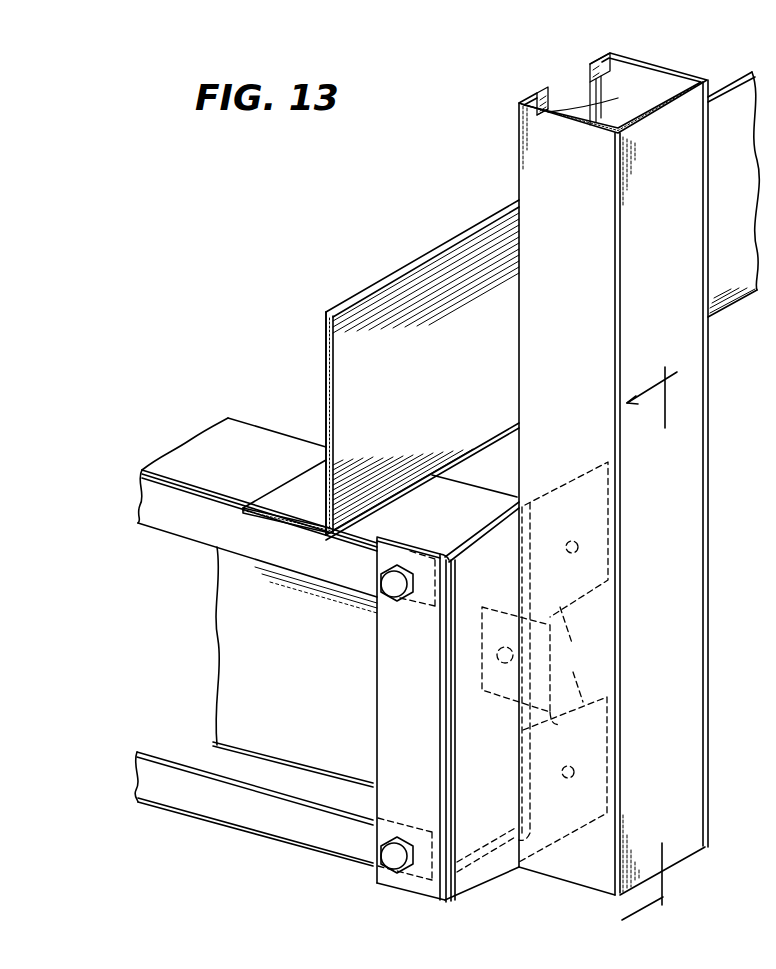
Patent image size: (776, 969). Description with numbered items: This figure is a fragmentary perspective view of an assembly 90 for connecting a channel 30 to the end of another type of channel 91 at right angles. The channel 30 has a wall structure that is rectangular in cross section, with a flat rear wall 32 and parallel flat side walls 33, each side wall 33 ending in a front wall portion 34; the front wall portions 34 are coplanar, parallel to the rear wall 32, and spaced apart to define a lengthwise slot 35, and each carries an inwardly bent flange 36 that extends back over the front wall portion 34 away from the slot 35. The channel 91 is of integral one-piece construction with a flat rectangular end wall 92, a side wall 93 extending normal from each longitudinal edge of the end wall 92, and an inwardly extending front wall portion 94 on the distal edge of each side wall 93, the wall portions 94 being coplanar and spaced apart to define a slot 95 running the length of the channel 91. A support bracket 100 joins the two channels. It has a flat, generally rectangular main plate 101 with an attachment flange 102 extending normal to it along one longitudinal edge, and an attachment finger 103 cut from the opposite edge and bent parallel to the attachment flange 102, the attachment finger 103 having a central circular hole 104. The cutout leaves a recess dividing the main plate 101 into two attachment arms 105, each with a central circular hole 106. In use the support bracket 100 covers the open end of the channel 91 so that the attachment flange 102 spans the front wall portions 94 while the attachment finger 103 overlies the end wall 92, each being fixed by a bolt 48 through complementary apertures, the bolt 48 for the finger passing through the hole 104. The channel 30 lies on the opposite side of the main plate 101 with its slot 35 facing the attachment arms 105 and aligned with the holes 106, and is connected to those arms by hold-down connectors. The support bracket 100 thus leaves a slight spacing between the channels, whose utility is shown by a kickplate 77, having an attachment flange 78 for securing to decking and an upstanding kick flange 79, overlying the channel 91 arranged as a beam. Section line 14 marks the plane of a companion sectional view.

The assembly 90 is at (398, 159).
The side wall 33 is at (678, 72).
The front wall portion 34 is at (608, 52).
The slot 35 is at (578, 90).
The flange 36 is at (600, 90).
The rear wall 32 is at (688, 613).
The channel 30 is at (717, 495).
The kickplate 77 is at (365, 280).
The kick flange 79 is at (325, 345).
The attachment flange 78 is at (297, 497).
The channel 91 is at (209, 423).
The end wall 92 is at (235, 650).
The side wall 93 is at (243, 440).
The front wall portion 94 is at (192, 523).
The slot 95 is at (205, 602).
The support bracket 100 is at (406, 711).
The main plate 101 is at (488, 870).
The attachment flange 102 is at (385, 646).
The attachment finger 103 is at (509, 655).
The circular hole 104 is at (507, 640).
The attachment arm 105 is at (582, 654).
The circular hole 106 is at (572, 555).
The bolt 48 is at (396, 567).
The section line 14 is at (667, 641).